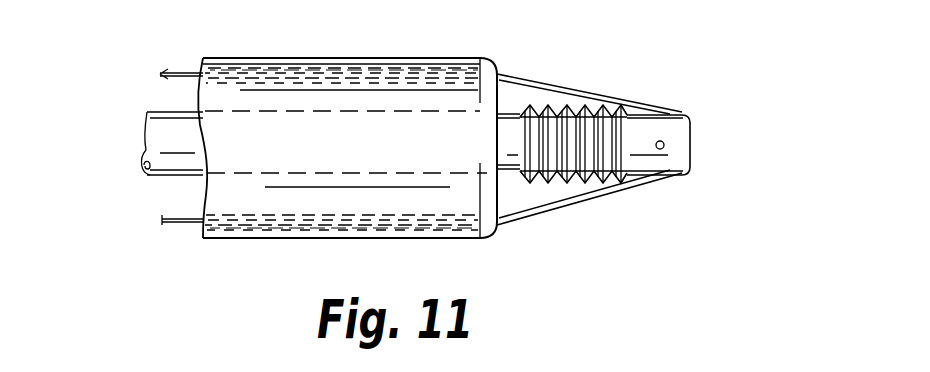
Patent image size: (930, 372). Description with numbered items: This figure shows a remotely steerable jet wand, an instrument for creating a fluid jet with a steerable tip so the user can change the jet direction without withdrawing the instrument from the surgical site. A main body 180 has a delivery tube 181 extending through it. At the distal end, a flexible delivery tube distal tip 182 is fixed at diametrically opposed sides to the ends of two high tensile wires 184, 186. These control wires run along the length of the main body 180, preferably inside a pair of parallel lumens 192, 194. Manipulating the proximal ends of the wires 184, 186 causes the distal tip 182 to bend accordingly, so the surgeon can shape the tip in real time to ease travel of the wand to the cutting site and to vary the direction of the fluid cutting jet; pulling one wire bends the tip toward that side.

The main body 180 is at (345, 58).
The delivery tube 181 is at (165, 112).
The flexible delivery tube distal tip 182 is at (688, 113).
The high tensile wire 184 is at (573, 203).
The high tensile wire 186 is at (555, 85).
The lumen 192 is at (450, 70).
The lumen 194 is at (445, 230).